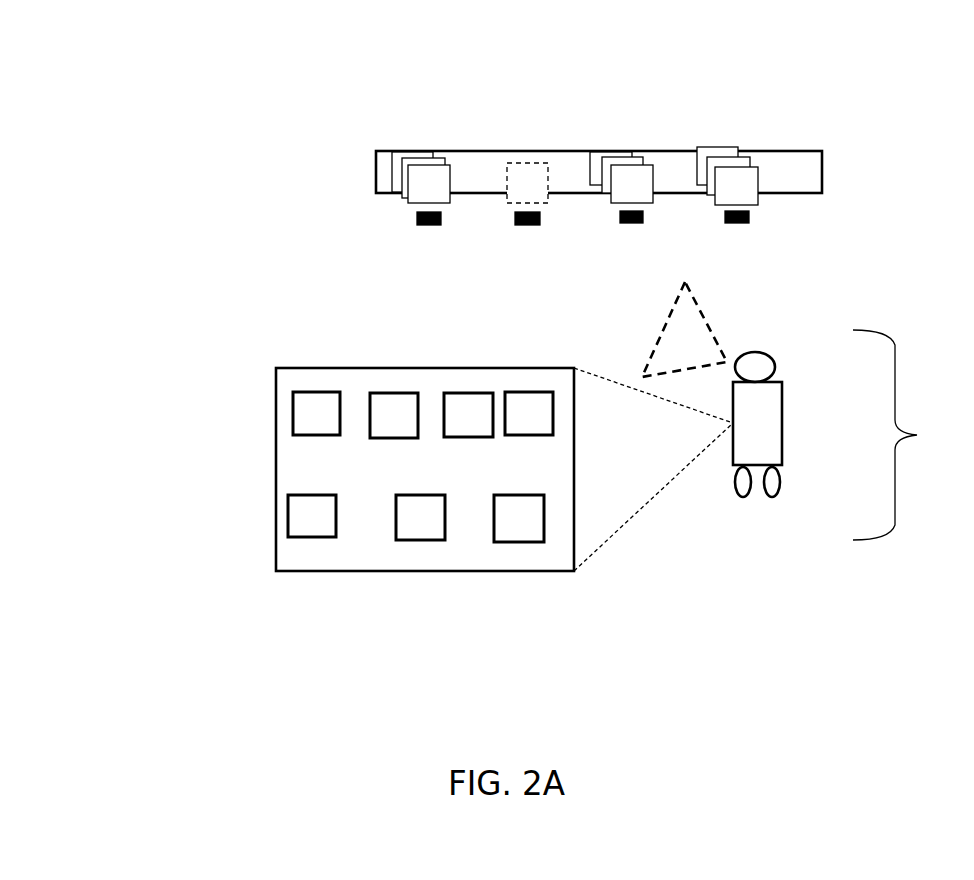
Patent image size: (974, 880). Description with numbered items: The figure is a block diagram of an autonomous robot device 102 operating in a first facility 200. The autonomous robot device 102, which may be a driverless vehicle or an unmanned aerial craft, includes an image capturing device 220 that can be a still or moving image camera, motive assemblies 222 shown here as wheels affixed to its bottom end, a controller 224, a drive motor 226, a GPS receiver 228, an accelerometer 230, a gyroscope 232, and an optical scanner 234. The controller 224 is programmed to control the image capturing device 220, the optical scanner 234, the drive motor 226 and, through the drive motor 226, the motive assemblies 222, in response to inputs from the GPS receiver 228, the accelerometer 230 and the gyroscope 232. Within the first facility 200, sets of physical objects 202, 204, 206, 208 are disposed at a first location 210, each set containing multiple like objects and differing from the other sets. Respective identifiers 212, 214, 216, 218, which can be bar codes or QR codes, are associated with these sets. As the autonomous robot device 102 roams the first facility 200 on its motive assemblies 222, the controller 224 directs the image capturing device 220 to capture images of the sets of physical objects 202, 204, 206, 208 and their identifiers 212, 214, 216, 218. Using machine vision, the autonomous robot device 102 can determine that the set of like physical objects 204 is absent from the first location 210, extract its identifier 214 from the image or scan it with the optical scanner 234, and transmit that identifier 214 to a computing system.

The first facility 200 is at (211, 53).
The first location 210 is at (495, 116).
The set of physical objects 202 is at (393, 180).
The set of like physical objects 204 is at (552, 195).
The set of physical objects 206 is at (655, 195).
The set of physical objects 208 is at (758, 198).
The identifier 212 is at (432, 225).
The identifier 214 is at (527, 225).
The identifier 216 is at (632, 223).
The identifier 218 is at (737, 223).
The controller 224 is at (290, 518).
The drive motor 226 is at (293, 410).
The GPS receiver 228 is at (393, 395).
The accelerometer 230 is at (468, 395).
The gyroscope 232 is at (527, 540).
The optical scanner 234 is at (530, 393).
The image capturing device 220 is at (777, 367).
The motive assemblies 222 is at (783, 483).
The autonomous robot device 102 is at (917, 435).